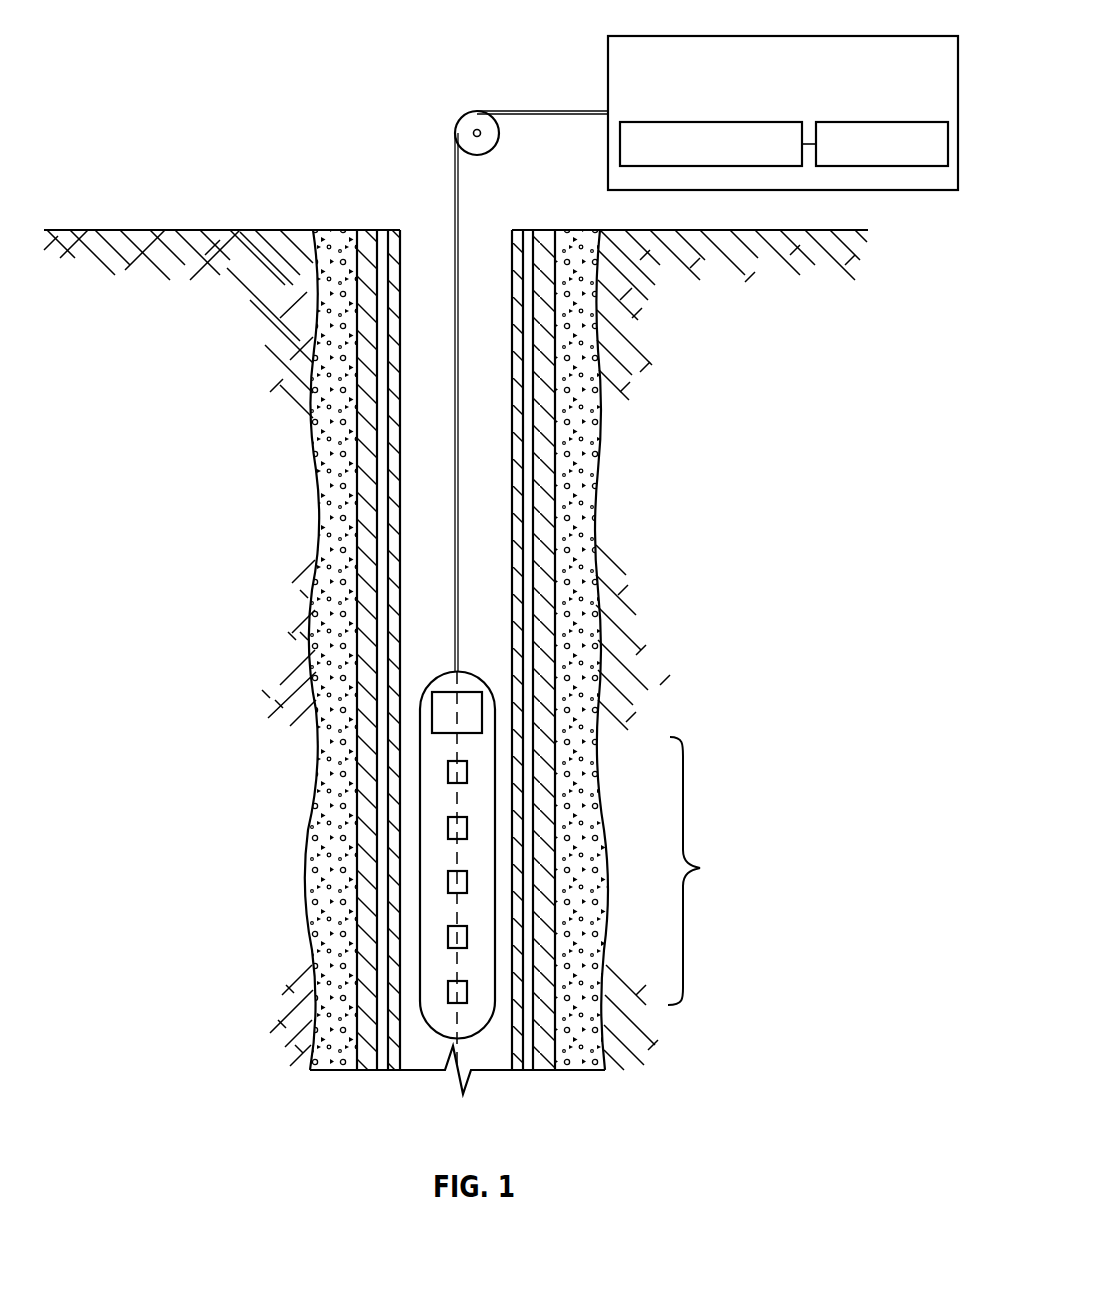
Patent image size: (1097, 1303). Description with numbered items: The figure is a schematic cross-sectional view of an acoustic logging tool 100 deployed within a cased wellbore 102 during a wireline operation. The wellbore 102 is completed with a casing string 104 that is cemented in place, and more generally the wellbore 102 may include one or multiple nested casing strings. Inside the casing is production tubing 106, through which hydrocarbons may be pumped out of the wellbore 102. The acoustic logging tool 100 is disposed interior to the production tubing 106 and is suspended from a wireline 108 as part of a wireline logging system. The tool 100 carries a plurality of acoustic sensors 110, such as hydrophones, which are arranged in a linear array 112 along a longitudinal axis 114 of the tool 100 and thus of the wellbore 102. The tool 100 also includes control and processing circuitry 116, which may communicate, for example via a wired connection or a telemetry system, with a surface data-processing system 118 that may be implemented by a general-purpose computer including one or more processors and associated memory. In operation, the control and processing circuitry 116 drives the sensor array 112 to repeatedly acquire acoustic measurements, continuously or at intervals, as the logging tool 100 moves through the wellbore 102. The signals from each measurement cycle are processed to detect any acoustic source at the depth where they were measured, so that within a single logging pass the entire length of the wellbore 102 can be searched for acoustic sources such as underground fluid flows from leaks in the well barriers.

The acoustic logging tool 100 is at (494, 828).
The cased wellbore 102 is at (378, 208).
The casing string 104 is at (367, 347).
The production tubing 106 is at (525, 433).
The wireline 108 is at (455, 427).
The acoustic sensors 110 is at (467, 772).
The linear array 112 is at (710, 871).
The longitudinal axis 114 is at (455, 800).
The control and processing circuitry 116 is at (447, 690).
The surface data-processing system 118 is at (888, 36).